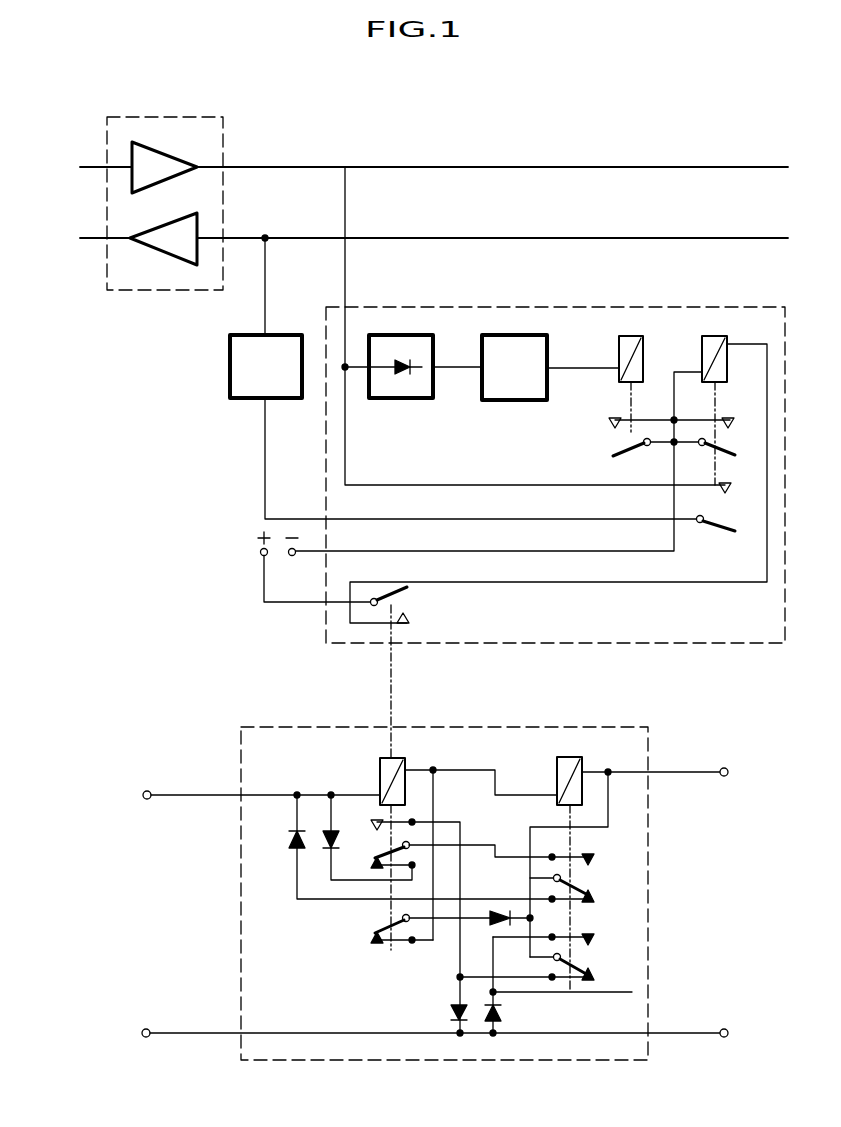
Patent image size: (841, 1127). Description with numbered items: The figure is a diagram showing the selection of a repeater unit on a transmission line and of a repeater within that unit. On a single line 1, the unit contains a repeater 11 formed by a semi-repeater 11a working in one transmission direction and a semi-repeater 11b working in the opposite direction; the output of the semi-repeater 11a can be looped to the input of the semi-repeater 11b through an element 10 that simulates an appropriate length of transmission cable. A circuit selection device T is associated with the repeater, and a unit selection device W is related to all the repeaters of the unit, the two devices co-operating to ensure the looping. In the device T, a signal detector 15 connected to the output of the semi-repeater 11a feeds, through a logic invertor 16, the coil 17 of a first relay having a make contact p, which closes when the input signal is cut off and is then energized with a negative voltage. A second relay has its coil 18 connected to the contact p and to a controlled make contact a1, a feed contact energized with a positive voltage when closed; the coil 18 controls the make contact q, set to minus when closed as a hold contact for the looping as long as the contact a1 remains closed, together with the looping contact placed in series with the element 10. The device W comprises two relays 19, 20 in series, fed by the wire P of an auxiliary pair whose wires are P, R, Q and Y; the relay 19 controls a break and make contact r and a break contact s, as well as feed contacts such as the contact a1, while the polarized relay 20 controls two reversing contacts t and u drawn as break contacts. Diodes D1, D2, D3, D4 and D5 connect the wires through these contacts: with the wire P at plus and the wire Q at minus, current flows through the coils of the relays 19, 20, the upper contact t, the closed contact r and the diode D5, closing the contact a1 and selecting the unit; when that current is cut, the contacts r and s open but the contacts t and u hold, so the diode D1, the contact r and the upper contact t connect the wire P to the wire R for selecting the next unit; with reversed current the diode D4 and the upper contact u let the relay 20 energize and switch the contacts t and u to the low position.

The line 1 is at (97, 238).
The repeater 11 is at (220, 152).
The semi-repeater 11a is at (152, 163).
The semi-repeater 11b is at (165, 236).
The element simulating cable length 10 is at (265, 352).
The signal detector 15 is at (413, 386).
The logic invertor 16 is at (502, 372).
The coil of first relay 17 is at (619, 360).
The coil of second relay 18 is at (705, 357).
The relay 19 is at (380, 776).
The polarized relay 20 is at (557, 777).
The circuit selection device T is at (462, 316).
The unit selection device W is at (256, 742).
The make contact p is at (625, 444).
The make contact q is at (738, 452).
The controlled make contact a1 is at (397, 595).
The break and make contact r is at (398, 851).
The break contact s is at (398, 926).
The reversing contact t is at (580, 880).
The reversing contact u is at (586, 965).
The diode D1 is at (327, 838).
The diode D2 is at (490, 918).
The diode D3 is at (290, 838).
The diode D4 is at (500, 1016).
The diode D5 is at (450, 1010).
The wire P is at (143, 792).
The wire Q is at (144, 1029).
The wire R is at (735, 773).
The wire Y is at (734, 1034).